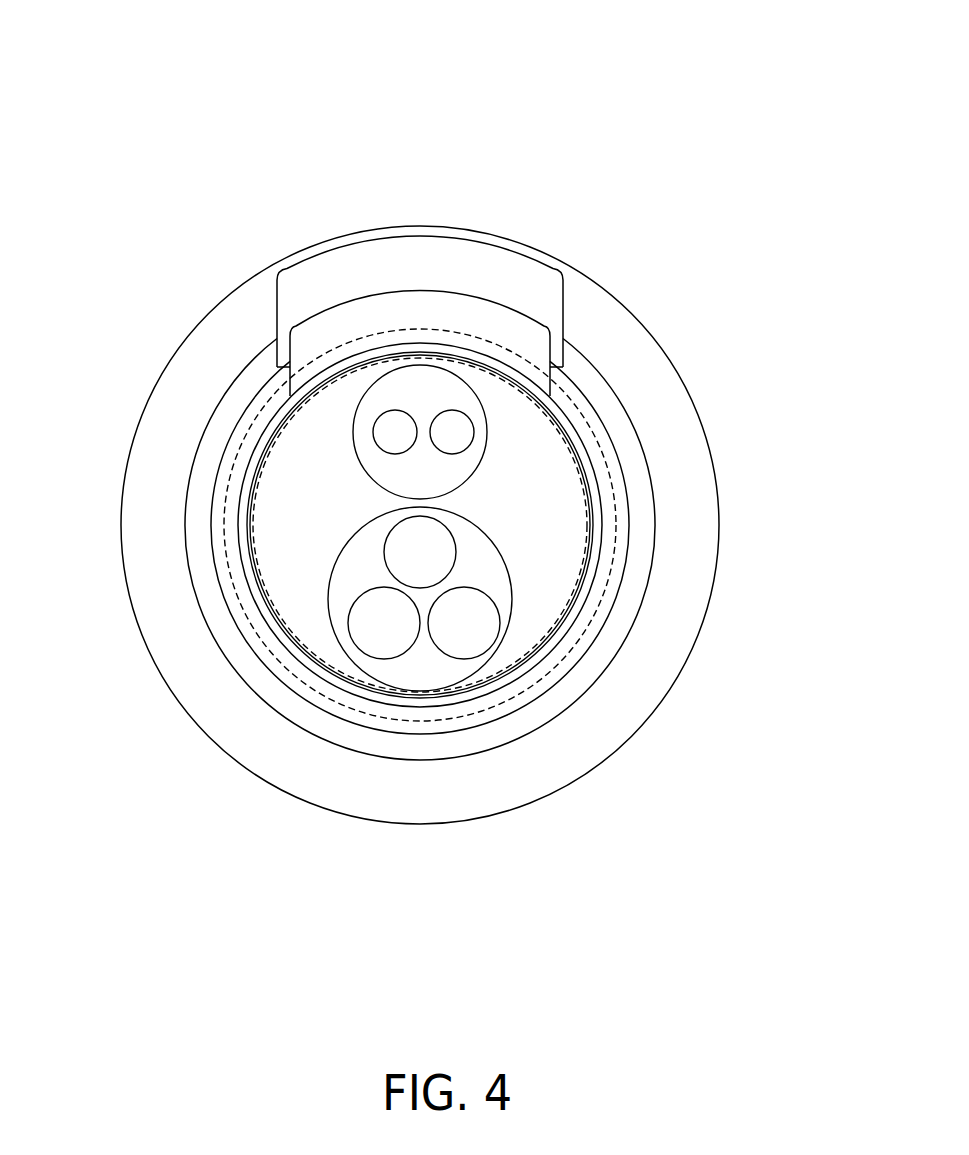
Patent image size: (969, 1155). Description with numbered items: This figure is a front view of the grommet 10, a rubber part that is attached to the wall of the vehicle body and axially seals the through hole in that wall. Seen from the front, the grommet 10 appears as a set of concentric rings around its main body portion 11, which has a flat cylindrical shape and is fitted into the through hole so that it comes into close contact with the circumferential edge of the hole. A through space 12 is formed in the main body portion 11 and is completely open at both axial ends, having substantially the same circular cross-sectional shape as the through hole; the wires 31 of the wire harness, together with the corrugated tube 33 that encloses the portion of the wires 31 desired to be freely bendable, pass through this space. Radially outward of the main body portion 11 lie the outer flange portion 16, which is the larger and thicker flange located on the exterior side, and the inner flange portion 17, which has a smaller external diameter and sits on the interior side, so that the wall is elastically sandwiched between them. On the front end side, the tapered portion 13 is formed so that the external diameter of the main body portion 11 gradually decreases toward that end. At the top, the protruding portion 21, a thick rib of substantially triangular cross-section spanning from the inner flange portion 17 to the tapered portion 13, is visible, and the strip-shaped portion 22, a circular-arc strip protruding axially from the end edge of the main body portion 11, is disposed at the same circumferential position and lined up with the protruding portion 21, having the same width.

The grommet 10 is at (368, 83).
The main body portion 11 is at (580, 410).
The through space 12 is at (562, 477).
The tapered portion 13 is at (612, 553).
The outer flange portion 16 is at (698, 472).
The inner flange portion 17 is at (640, 517).
The protruding portion 21 is at (473, 248).
The strip-shaped portion 22 is at (397, 302).
The wires 31 is at (468, 638).
The corrugated tube 33 is at (555, 607).